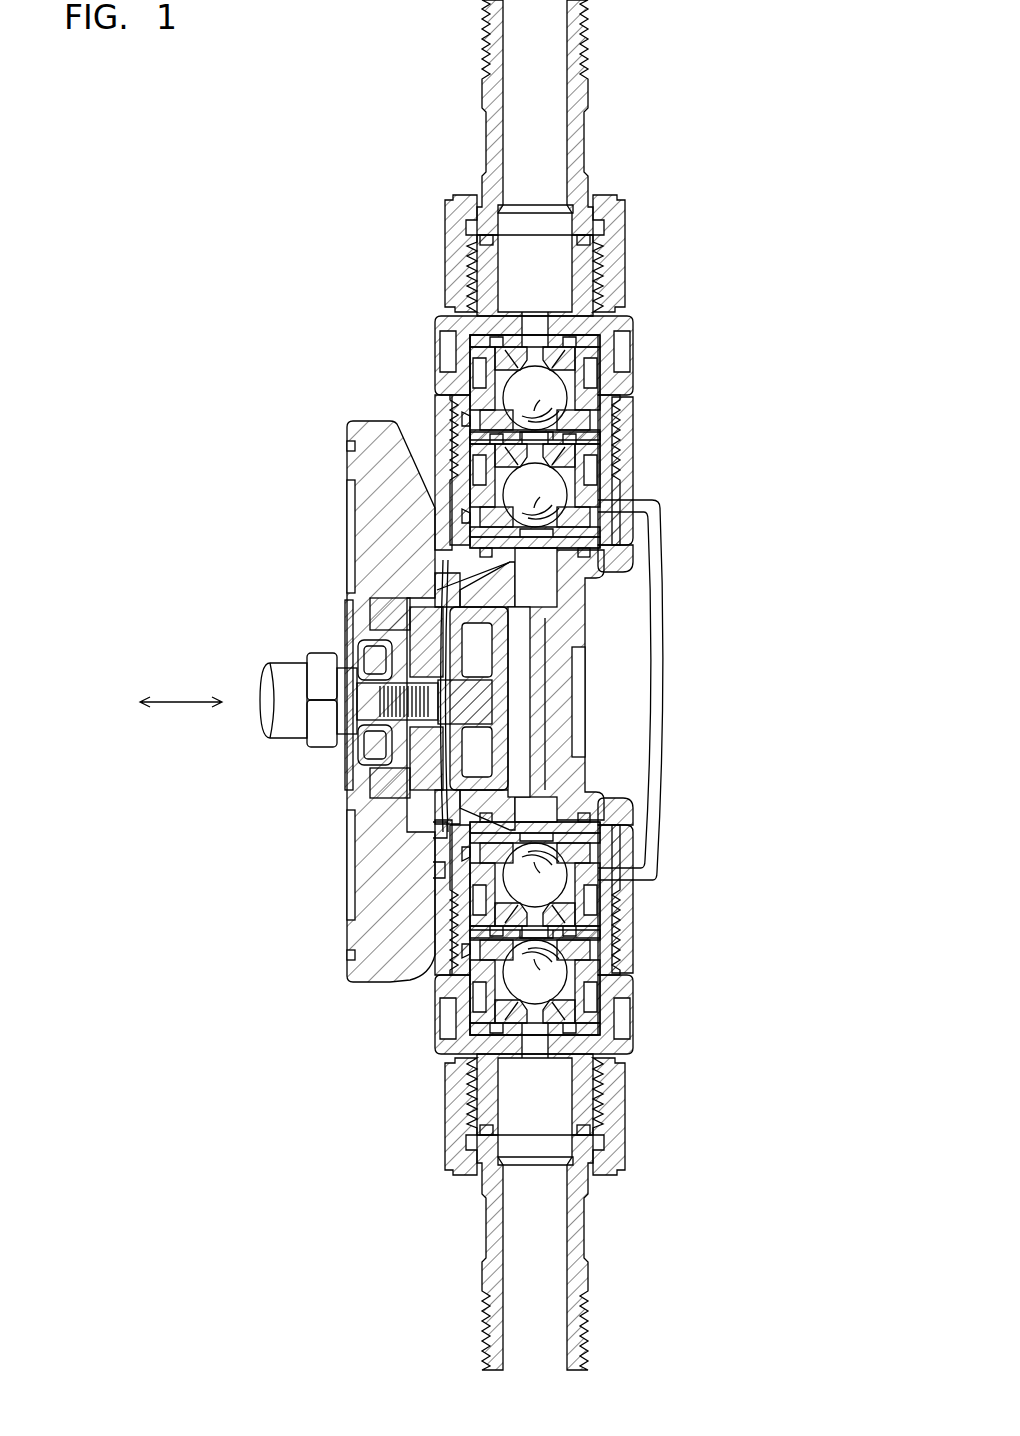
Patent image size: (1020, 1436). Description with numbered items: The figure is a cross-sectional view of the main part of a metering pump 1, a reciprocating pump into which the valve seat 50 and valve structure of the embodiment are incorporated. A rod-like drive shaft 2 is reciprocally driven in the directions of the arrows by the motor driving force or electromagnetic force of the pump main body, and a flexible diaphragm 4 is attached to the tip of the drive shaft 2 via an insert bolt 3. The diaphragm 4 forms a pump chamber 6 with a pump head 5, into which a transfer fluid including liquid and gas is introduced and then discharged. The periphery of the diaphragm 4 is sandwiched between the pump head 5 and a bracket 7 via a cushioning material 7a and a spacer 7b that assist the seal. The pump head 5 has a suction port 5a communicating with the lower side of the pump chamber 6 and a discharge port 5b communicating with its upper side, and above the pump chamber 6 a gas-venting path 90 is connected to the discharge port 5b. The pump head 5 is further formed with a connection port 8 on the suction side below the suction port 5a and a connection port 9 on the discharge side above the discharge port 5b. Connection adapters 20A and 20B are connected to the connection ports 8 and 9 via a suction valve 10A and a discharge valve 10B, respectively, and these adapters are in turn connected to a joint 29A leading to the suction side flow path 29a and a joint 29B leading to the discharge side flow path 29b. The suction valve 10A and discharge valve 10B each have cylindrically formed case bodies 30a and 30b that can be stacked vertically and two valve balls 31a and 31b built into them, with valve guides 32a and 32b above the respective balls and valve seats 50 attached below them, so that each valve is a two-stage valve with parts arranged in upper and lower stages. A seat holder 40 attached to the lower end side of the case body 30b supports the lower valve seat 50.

The metering pump 1 is at (742, 113).
The drive shaft 2 is at (285, 663).
The insert bolt 3 is at (345, 765).
The diaphragm 4 is at (400, 792).
The pump head 5 is at (581, 685).
The suction port 5a is at (545, 800).
The discharge port 5b is at (540, 580).
The pump chamber 6 is at (515, 722).
The bracket 7 is at (360, 915).
The cushioning material 7a is at (435, 870).
The spacer 7b is at (440, 830).
The connection port 8 is at (620, 920).
The connection port 9 is at (620, 438).
The suction valve 10A is at (632, 965).
The discharge valve 10B is at (642, 410).
The connection adapter 20A is at (640, 1018).
The connection adapter 20B is at (640, 348).
The joint 29A is at (560, 1130).
The joint 29B is at (548, 238).
The suction side flow path 29a is at (545, 1318).
The discharge side flow path 29b is at (545, 45).
The case body 30a is at (470, 360).
The case body 30b is at (585, 462).
The valve ball 31a is at (488, 405).
The valve ball 31b is at (585, 502).
The valve guide 32a is at (600, 390).
The valve guide 32b is at (595, 486).
The seat holder 40 is at (607, 530).
The valve seat 50 is at (468, 507).
The gas-venting path 90 is at (446, 567).